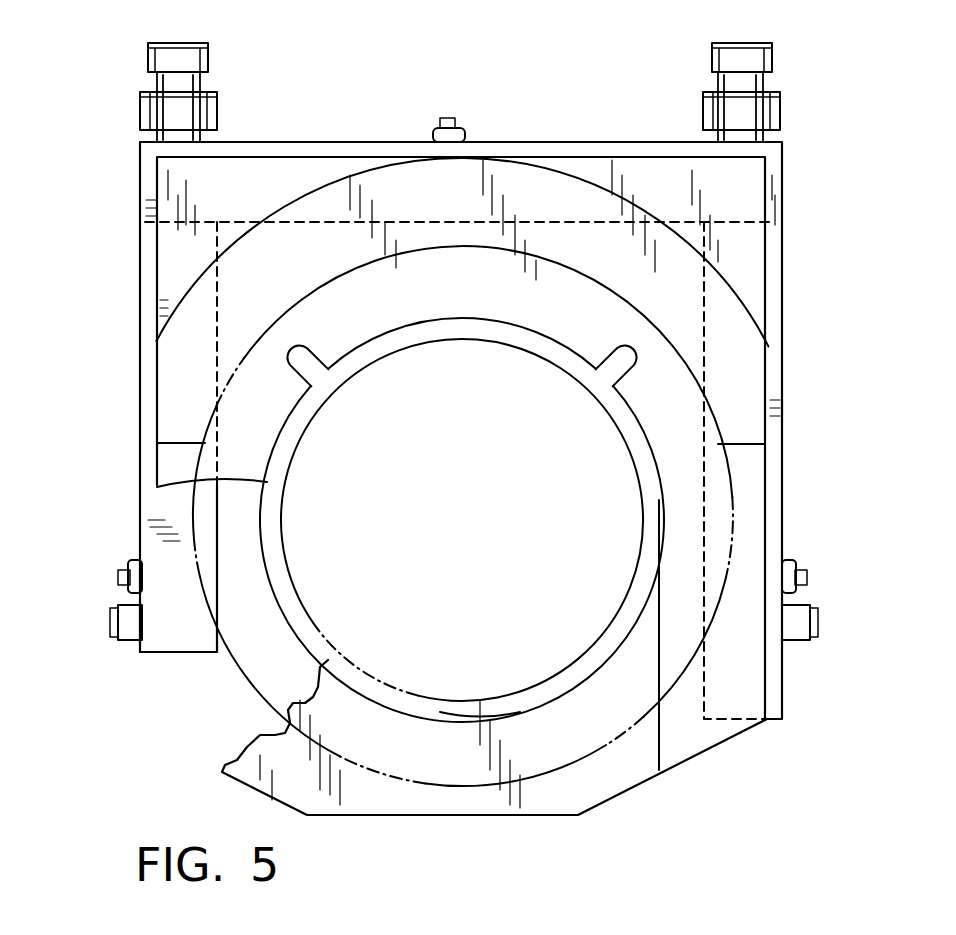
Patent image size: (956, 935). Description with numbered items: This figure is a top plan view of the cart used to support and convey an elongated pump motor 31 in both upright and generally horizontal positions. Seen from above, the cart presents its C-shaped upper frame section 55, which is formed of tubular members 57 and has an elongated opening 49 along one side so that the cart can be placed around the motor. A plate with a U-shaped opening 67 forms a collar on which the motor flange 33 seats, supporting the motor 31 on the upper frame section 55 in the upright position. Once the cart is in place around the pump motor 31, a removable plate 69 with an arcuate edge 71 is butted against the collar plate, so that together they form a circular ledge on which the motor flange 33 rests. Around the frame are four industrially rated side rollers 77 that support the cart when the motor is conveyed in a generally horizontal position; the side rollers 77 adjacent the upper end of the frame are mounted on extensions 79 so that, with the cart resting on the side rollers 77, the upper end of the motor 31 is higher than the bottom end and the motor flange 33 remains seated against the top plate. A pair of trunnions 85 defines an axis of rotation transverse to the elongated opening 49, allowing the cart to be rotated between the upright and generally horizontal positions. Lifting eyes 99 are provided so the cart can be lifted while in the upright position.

The pump motor 31 is at (337, 615).
The motor flange 33 is at (455, 740).
The elongated opening 49 is at (225, 650).
The C-shaped upper frame section 55 is at (137, 485).
The tubular members 57 is at (343, 142).
The U-shaped opening 67 is at (440, 320).
The removable plate 69 is at (600, 775).
The arcuate edge 71 is at (482, 700).
The side rollers 77 is at (207, 55).
The extensions 79 is at (192, 93).
The trunnions 85 is at (130, 640).
The lifting eyes 99 is at (455, 125).